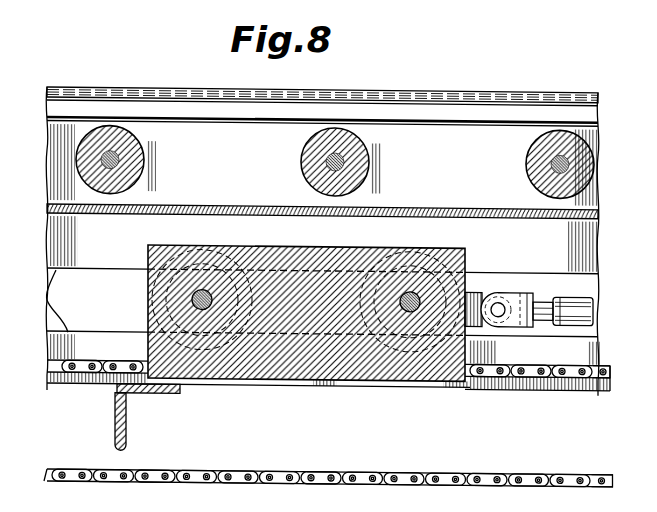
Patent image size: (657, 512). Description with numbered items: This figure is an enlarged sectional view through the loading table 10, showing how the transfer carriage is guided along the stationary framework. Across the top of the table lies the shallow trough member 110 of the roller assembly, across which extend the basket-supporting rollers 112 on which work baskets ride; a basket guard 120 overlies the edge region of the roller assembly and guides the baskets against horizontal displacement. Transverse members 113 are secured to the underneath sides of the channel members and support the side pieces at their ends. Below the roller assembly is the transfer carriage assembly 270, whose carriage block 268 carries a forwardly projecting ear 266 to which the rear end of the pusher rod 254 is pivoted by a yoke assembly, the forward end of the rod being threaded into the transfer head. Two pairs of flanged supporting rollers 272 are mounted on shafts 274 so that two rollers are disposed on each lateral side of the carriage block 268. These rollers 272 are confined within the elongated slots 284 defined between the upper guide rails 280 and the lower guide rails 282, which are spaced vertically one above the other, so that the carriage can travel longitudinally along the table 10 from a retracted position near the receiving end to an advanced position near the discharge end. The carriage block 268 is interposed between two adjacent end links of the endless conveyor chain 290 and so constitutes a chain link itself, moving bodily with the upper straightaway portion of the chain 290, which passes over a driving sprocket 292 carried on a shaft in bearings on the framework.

The loading table 10 is at (470, 78).
The basket guard 120 is at (512, 105).
The basket-supporting rollers 112 is at (143, 158).
The trough member 110 is at (227, 203).
The elongated slots 284 is at (53, 299).
The upper guide rails 280 is at (98, 250).
The lower guide rails 282 is at (80, 332).
The transfer carriage assembly 270 is at (472, 252).
The shafts 274 is at (202, 289).
The supporting rollers 272 is at (236, 379).
The carriage block 268 is at (436, 385).
The ear 266 is at (500, 323).
The pusher rod 254 is at (573, 297).
The driving sprocket 292 is at (82, 374).
The conveyor chain 290 is at (512, 467).
The transverse members 113 is at (155, 396).